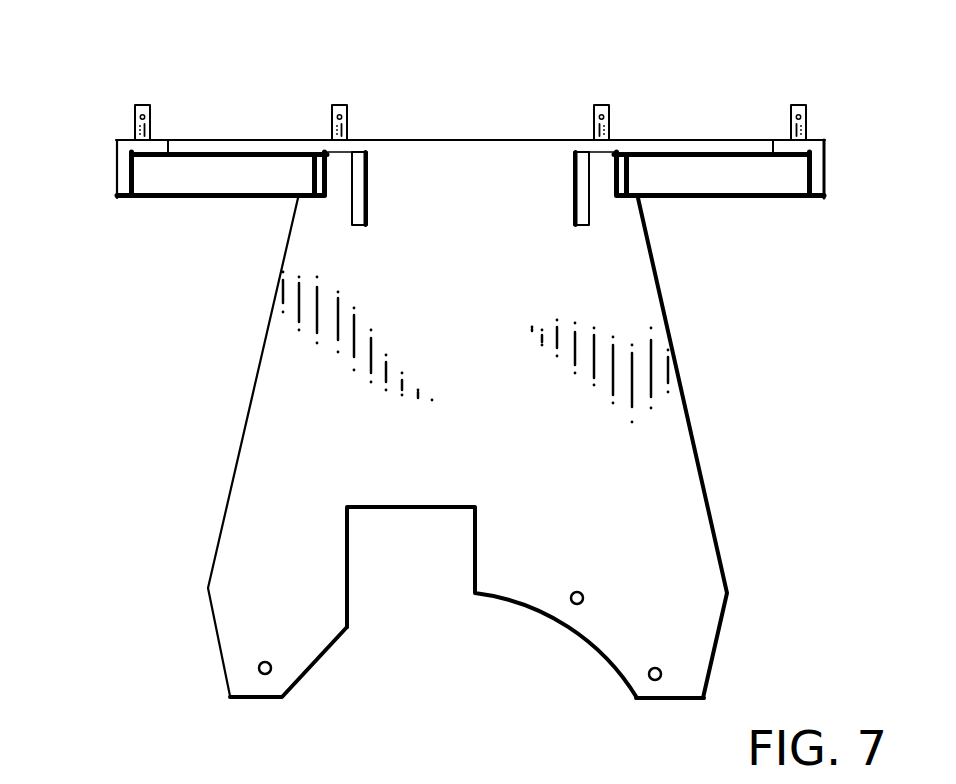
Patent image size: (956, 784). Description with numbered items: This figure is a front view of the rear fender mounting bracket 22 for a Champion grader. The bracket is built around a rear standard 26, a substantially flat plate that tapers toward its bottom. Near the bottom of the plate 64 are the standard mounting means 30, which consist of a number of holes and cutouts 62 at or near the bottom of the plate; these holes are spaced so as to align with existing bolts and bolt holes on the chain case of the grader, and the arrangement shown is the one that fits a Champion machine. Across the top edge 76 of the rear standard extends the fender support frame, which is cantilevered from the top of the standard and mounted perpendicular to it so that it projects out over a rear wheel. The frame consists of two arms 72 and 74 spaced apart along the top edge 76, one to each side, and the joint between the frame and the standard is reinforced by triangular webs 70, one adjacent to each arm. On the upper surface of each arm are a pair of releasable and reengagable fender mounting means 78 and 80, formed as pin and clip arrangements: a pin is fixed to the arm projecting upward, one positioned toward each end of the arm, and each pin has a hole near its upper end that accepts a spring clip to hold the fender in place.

The rear fender mounting bracket 22 is at (712, 80).
The rear standard 26 is at (683, 407).
The standard mounting means 30 is at (535, 551).
The holes and cutouts 62 is at (259, 664).
The plate 64 is at (683, 703).
The triangular webs 70 is at (368, 203).
The arm 72 is at (248, 140).
The arm 74 is at (726, 189).
The top edge 76 is at (447, 140).
The fender mounting means 78 is at (346, 105).
The fender mounting means 80 is at (135, 102).